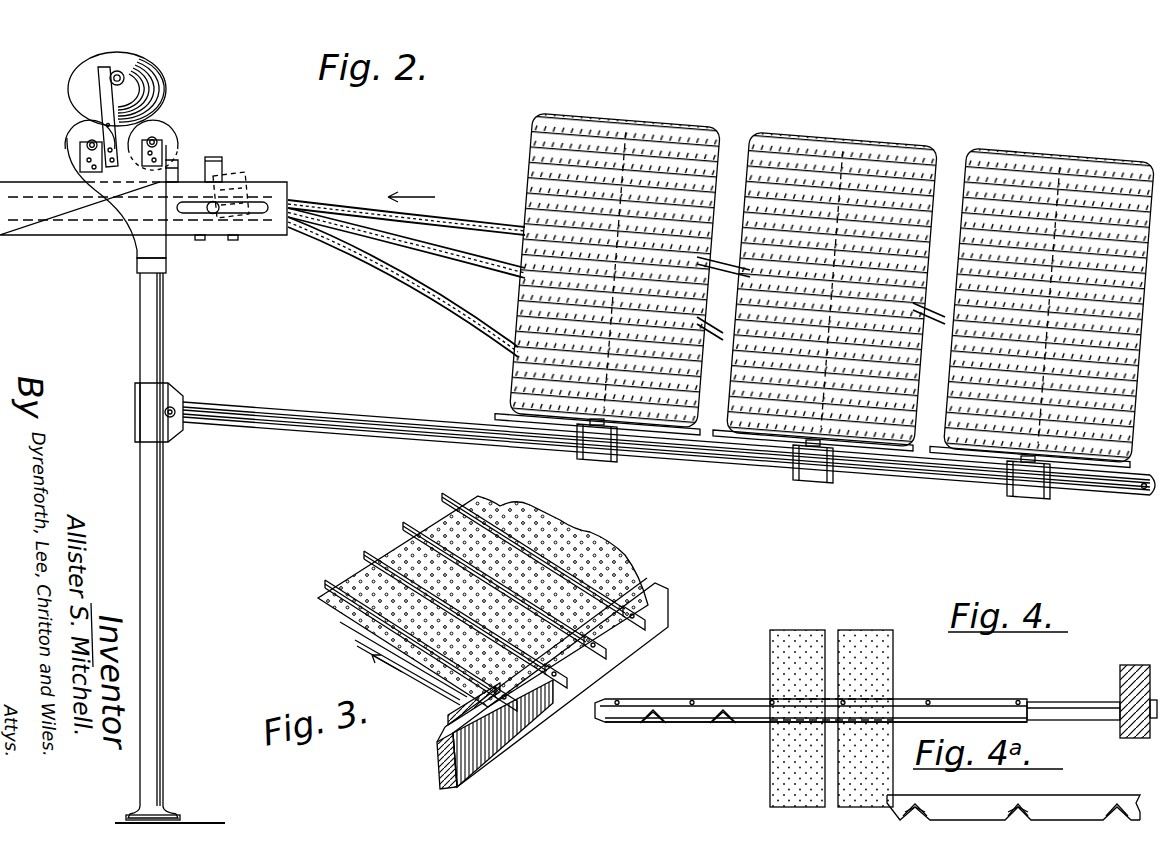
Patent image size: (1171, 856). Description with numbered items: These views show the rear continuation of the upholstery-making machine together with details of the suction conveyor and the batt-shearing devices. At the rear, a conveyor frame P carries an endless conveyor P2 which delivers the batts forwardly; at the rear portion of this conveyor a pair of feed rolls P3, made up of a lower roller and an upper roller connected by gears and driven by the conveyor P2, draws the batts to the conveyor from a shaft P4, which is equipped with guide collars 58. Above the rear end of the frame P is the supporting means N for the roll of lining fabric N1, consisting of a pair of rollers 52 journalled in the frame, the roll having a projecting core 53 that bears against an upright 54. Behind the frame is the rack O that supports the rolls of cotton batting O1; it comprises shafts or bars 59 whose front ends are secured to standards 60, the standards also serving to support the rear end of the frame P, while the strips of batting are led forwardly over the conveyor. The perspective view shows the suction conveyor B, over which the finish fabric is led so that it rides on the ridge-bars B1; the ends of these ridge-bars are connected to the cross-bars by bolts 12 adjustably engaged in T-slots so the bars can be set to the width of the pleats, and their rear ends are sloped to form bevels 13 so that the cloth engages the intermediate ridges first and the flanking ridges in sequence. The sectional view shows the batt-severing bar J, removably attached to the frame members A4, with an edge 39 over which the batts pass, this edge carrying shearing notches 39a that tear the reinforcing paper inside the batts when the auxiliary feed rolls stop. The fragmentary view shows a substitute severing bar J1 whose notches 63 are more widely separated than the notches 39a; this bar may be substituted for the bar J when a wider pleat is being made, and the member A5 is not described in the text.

In FIG. 2, the endless conveyor P2 is at (143, 232).
In FIG. 2, the conveyor frame P is at (63, 235).
In FIG. 2, the supporting means for roll of lining fabric N is at (160, 120).
In FIG. 2, the rollers 52 is at (72, 145).
In FIG. 2, the roll of lining fabric N1 is at (72, 82).
In FIG. 2, the projecting core 53 is at (125, 78).
In FIG. 2, the upright 54 is at (97, 72).
In FIG. 2, the pair of feed rolls P3 is at (236, 183).
In FIG. 2, the shaft P4 is at (248, 215).
In FIG. 2, the standards 60 is at (152, 337).
In FIG. 2, the rack for rolls of batting O is at (413, 423).
In FIG. 2, the shafts or bars 59 is at (1105, 490).
In FIG. 2, the rolls of cotton batting O1 is at (410, 277).
In FIG. 3, the suction conveyor B is at (483, 601).
In FIG. 3, the ridge-bars B1 is at (365, 547).
In FIG. 3, the bevels 13 is at (605, 588).
In FIG. 3, the side beam A5 is at (470, 747).
In FIG. 3, the guide collars 58 is at (450, 715).
In FIG. 3, the bolts 12 is at (550, 670).
In FIG. 4, the batt-severing bar J is at (967, 707).
In FIG. 4, the shearing notches 39a is at (655, 723).
In FIG. 4, the edge 39 is at (750, 723).
In FIG. 4, the frame members A4 is at (1120, 685).
In FIG. 4A, the severing bar J1 is at (1085, 800).
In FIG. 4A, the notches 63 is at (1015, 813).